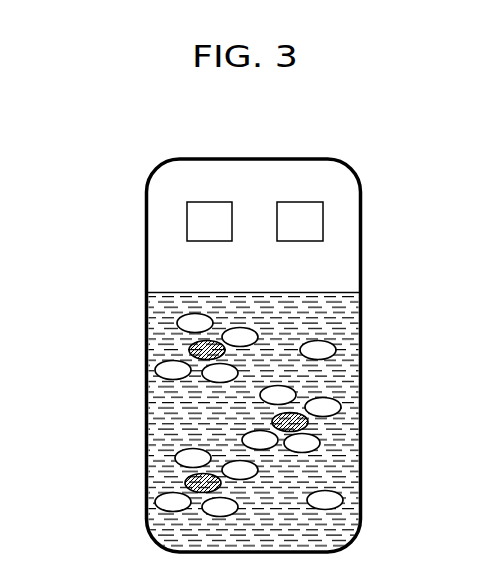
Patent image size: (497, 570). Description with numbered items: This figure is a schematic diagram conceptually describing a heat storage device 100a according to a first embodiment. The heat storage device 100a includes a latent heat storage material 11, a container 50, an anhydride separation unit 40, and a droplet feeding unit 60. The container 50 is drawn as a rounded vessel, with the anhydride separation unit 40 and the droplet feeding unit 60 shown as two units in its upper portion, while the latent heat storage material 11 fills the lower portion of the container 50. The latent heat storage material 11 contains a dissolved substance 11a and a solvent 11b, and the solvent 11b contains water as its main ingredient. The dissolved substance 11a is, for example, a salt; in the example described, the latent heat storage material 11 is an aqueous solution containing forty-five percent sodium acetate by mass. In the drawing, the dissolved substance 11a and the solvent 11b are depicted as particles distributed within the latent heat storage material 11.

The heat storage device 100a is at (321, 127).
The container 50 is at (349, 166).
The latent heat storage material 11 is at (63, 331).
The solvent 11b is at (177, 325).
The dissolved substance 11a is at (272, 420).
The anhydride separation unit 40 is at (187, 223).
The droplet feeding unit 60 is at (318, 221).